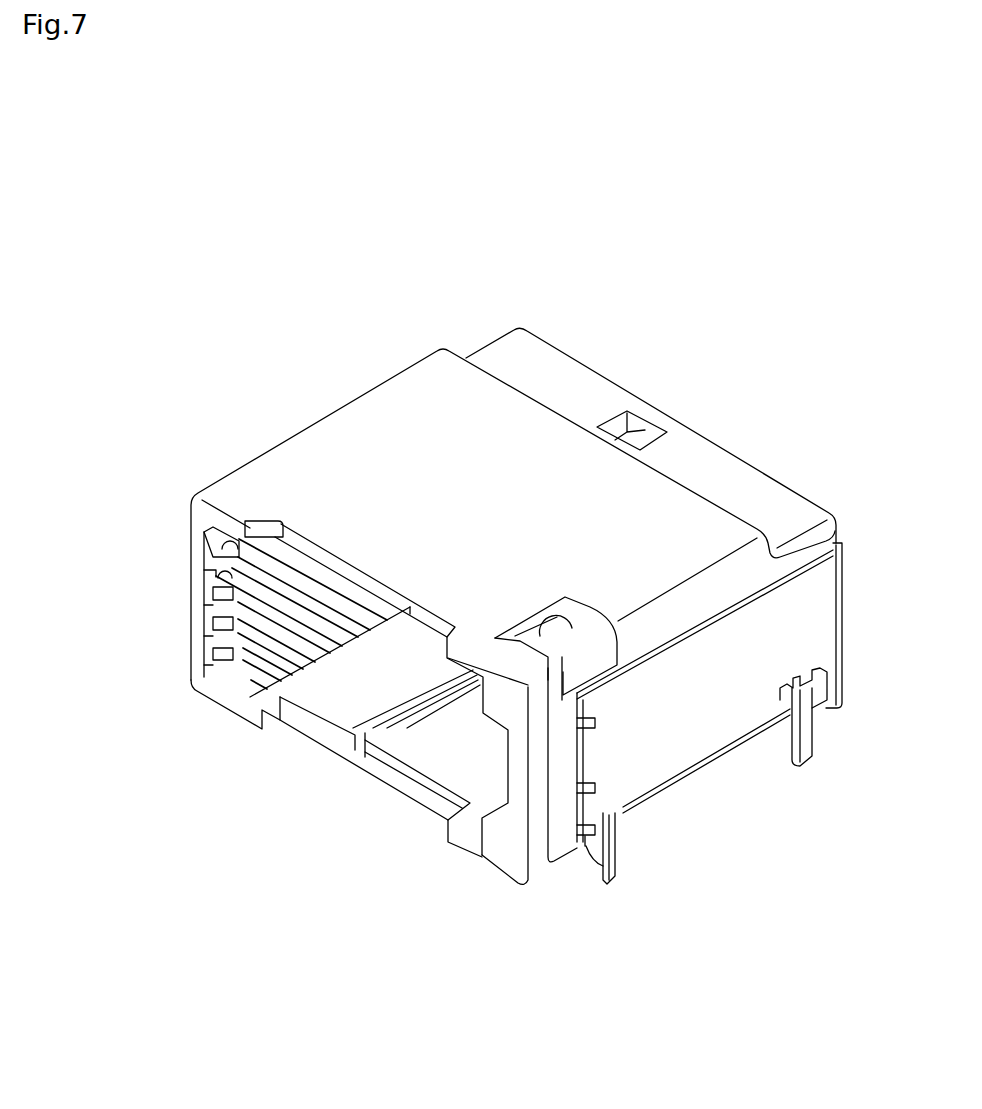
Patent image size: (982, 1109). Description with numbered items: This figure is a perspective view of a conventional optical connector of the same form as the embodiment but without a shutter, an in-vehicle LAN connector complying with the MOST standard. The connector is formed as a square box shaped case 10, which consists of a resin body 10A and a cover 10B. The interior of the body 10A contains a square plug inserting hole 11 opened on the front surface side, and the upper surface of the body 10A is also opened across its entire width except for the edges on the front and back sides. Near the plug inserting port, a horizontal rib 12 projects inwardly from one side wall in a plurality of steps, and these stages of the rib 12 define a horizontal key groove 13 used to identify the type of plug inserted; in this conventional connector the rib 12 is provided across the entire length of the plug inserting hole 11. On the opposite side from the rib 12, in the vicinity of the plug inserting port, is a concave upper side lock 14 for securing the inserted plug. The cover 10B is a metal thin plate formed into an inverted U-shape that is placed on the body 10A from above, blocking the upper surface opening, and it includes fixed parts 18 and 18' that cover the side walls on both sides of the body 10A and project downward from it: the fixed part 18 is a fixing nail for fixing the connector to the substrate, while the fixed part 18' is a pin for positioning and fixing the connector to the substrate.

The case 10 is at (600, 370).
The body 10A is at (385, 405).
The cover 10B is at (842, 605).
The plug inserting hole 11 is at (365, 680).
The rib 12 is at (225, 580).
The key groove 13 is at (225, 605).
The upper side lock 14 is at (577, 637).
The fixed part 18 is at (630, 866).
The fixed part 18' is at (805, 760).